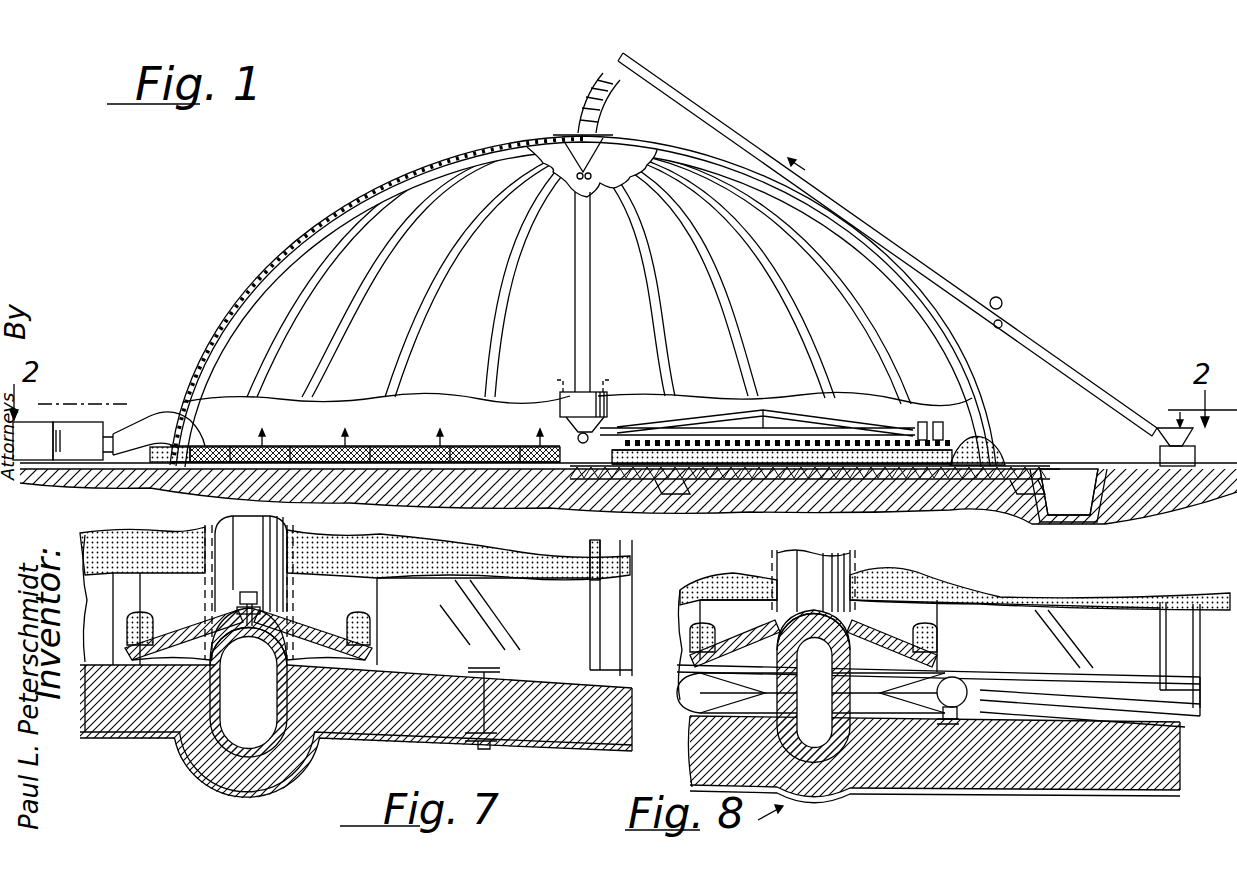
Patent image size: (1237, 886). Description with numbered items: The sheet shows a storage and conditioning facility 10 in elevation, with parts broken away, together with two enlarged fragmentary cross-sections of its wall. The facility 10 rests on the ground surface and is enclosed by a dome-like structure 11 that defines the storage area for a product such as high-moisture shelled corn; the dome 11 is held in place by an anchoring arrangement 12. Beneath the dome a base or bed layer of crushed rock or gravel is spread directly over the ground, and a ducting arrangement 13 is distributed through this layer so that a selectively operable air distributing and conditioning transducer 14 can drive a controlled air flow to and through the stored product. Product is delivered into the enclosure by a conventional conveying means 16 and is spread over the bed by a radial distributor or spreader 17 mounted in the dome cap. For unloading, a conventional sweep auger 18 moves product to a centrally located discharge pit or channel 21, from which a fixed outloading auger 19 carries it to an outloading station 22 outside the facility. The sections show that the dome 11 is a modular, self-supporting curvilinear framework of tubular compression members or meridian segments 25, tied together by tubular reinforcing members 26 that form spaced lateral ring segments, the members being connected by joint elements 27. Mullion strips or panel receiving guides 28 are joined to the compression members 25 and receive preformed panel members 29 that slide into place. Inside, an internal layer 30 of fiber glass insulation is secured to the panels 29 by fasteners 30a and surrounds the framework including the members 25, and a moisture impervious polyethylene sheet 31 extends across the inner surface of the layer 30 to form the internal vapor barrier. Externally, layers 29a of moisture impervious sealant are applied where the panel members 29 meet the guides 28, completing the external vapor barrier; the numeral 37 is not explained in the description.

In FIG. 1, the storage facility 10 is at (338, 188).
In FIG. 1, the dome-like structure 11 is at (303, 279).
In FIG. 1, the anchoring arrangement 12 is at (172, 483).
In FIG. 1, the ducting arrangement 13 is at (400, 447).
In FIG. 1, the air distributing and conditioning transducer 14 is at (109, 436).
In FIG. 1, the conveying means 16 is at (870, 222).
In FIG. 1, the radial distributor or spreader 17 is at (553, 140).
In FIG. 1, the sweep auger 18 is at (797, 430).
In FIG. 1, the outloading auger 19 is at (893, 483).
In FIG. 1, the discharge pit or channel 21 is at (550, 440).
In FIG. 1, the outloading station 22 is at (1103, 468).
In FIG. 7, the tubular compression members or meridian segments 25 is at (185, 752).
In FIG. 8, the tubular compression members or meridian segments 25 is at (823, 796).
In FIG. 8, the tubular reinforcing members 26 is at (1181, 750).
In FIG. 8, the joint elements 27 is at (883, 716).
In FIG. 1, the mullion strips or panel receiving guides 28 is at (578, 316).
In FIG. 7, the mullion strips or panel receiving guides 28 is at (294, 611).
In FIG. 8, the mullion strips or panel receiving guides 28 is at (896, 611).
In FIG. 1, the panel members 29 is at (640, 343).
In FIG. 7, the panel members 29 is at (497, 604).
In FIG. 8, the panel members 29 is at (1083, 638).
In FIG. 7, the layers of moisture impervious sealant 29a is at (182, 598).
In FIG. 8, the layers of moisture impervious sealant 29a is at (718, 636).
In FIG. 7, the internal insulation layer 30 is at (385, 733).
In FIG. 8, the internal insulation layer 30 is at (1093, 783).
In FIG. 7, the fasteners 30a is at (492, 744).
In FIG. 7, the moisture impervious sheet 31 is at (128, 735).
In FIG. 8, the moisture impervious sheet 31 is at (1030, 794).
In FIG. 1, the floor plate 37 is at (305, 458).